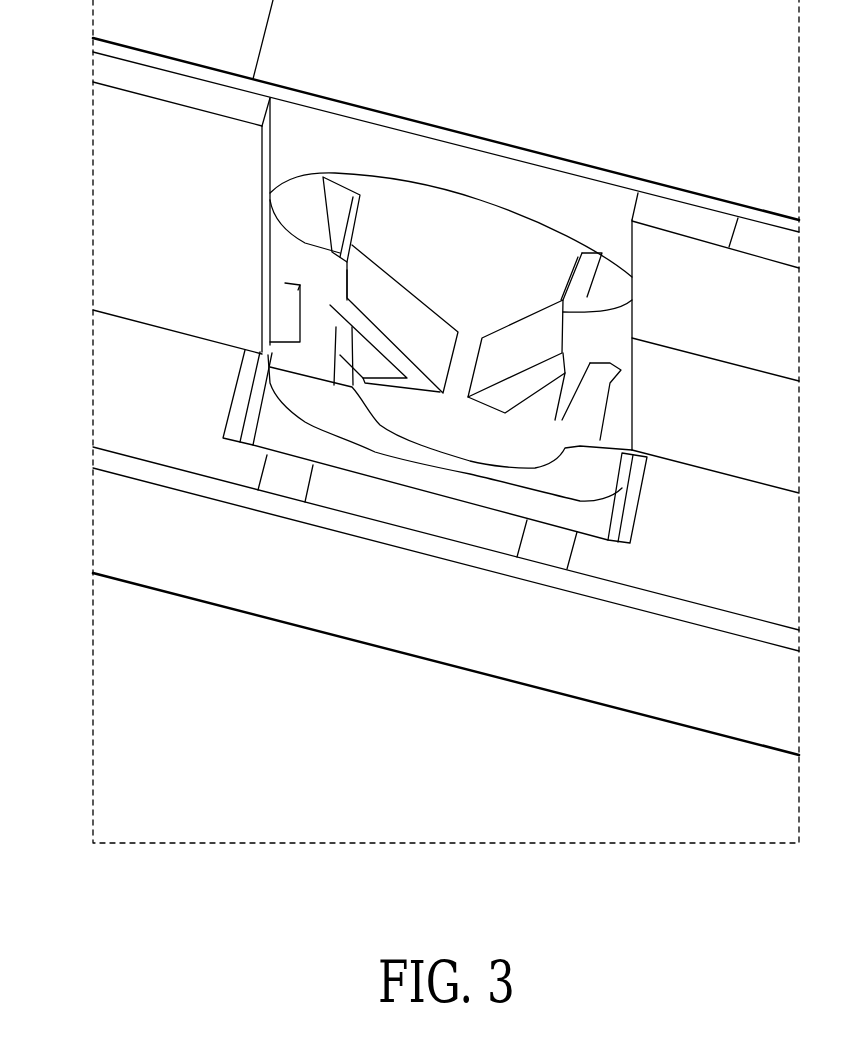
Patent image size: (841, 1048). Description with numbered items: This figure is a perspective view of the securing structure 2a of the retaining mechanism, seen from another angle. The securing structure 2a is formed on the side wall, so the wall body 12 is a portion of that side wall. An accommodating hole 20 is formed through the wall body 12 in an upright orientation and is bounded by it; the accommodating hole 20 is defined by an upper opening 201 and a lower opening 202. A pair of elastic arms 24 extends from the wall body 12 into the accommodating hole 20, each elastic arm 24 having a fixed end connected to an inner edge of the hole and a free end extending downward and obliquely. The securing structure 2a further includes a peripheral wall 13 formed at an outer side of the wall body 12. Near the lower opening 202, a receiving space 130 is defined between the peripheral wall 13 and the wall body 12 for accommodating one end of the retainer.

The wall body 12 is at (116, 192).
The securing structure 2a is at (600, 155).
The accommodating hole 20 is at (451, 243).
The elastic arms 24 is at (518, 350).
The upper opening 201 is at (541, 222).
The lower opening 202 is at (453, 425).
The receiving space 130 is at (277, 425).
The peripheral wall 13 is at (116, 403).